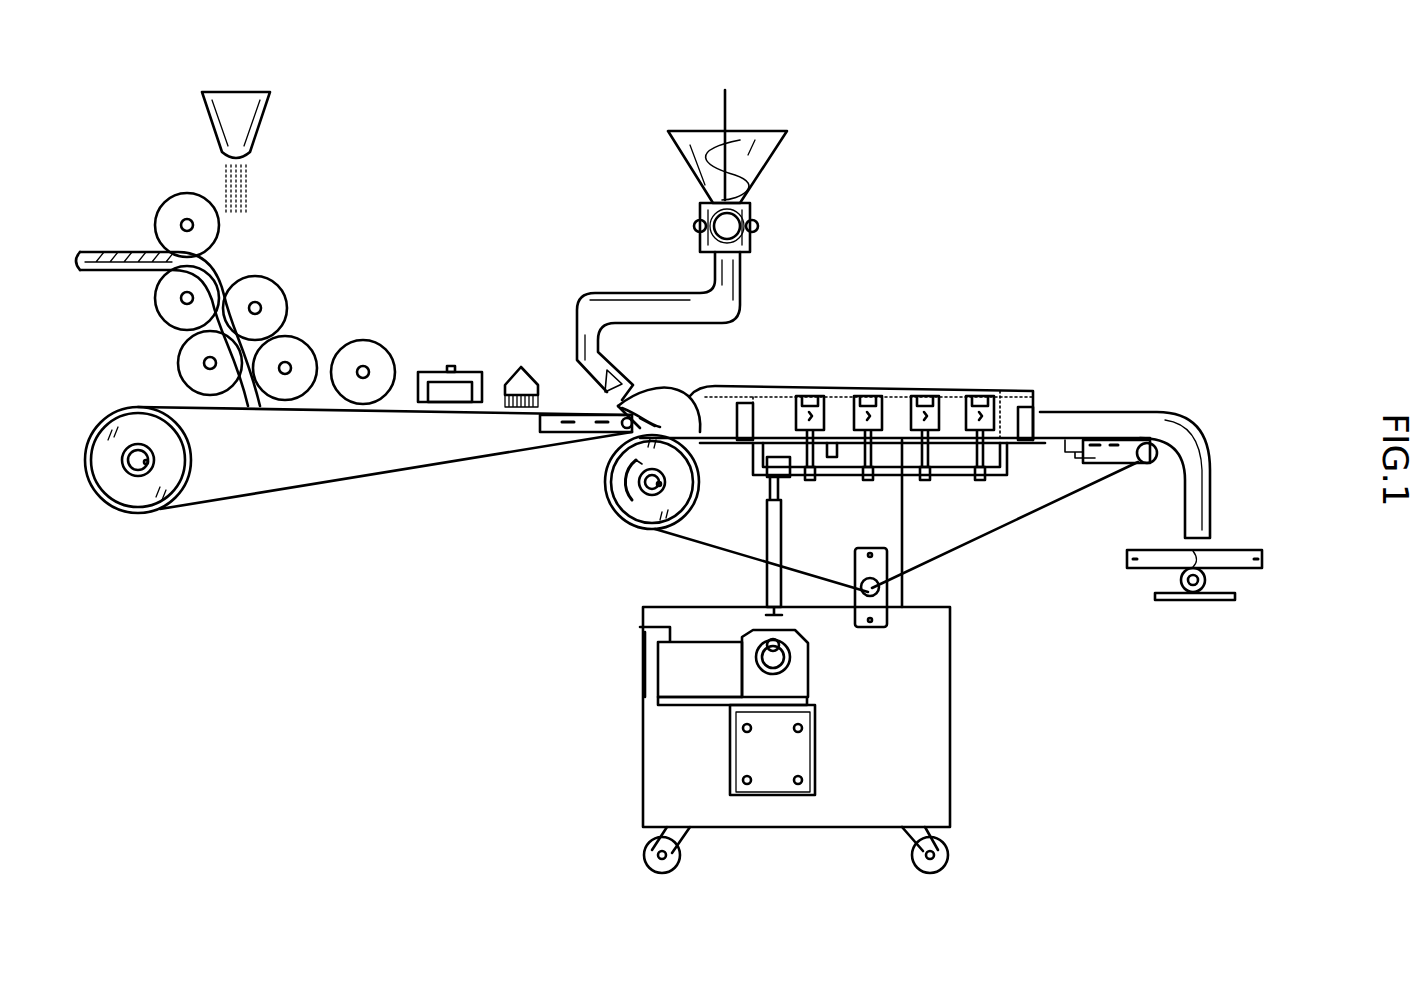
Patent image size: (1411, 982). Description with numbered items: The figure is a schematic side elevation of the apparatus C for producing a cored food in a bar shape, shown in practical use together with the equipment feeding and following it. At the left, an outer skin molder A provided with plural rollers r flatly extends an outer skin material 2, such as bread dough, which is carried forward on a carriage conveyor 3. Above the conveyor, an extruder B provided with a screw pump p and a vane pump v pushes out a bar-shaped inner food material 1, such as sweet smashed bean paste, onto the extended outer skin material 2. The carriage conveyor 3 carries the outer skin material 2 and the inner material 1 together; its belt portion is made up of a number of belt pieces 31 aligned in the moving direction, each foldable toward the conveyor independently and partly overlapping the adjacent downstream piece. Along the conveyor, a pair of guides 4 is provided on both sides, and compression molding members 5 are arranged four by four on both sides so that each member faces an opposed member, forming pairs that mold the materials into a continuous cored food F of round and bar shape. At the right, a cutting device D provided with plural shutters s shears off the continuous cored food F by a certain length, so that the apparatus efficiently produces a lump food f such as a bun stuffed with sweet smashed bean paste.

The inner food material 1 is at (634, 394).
The outer skin material 2 is at (222, 270).
The carriage conveyor 3 is at (602, 508).
The guide 4 is at (787, 386).
The compression molding member 5 is at (870, 405).
The belt piece 31 is at (690, 404).
The roller r is at (163, 216).
The screw pump p is at (748, 163).
The vane pump v is at (752, 218).
The shutter s is at (1152, 550).
The lump food f is at (1178, 578).
The outer skin molder A is at (310, 270).
The extruder B is at (678, 233).
The apparatus of producing a cored food in a bar shape C is at (850, 362).
The cutting device D is at (1118, 586).
The cored food F is at (1100, 410).